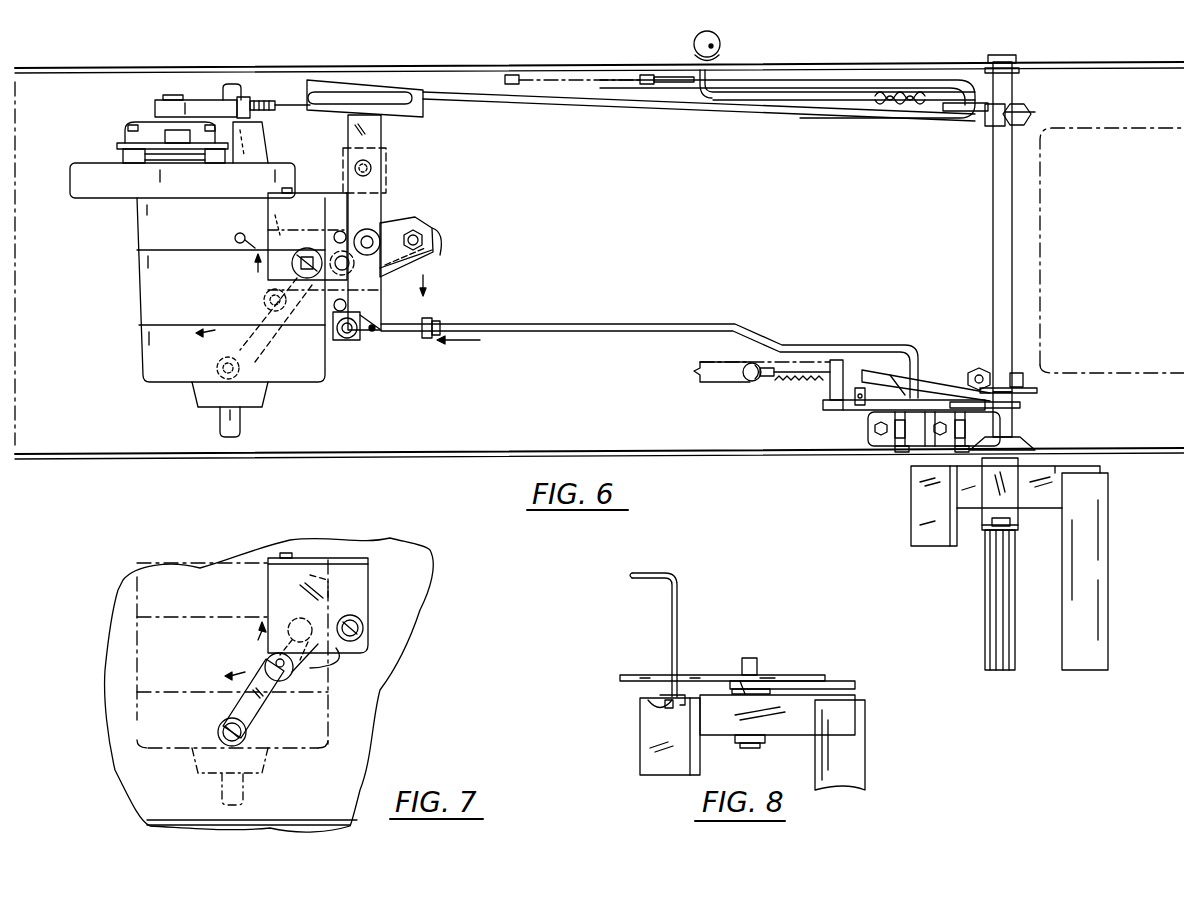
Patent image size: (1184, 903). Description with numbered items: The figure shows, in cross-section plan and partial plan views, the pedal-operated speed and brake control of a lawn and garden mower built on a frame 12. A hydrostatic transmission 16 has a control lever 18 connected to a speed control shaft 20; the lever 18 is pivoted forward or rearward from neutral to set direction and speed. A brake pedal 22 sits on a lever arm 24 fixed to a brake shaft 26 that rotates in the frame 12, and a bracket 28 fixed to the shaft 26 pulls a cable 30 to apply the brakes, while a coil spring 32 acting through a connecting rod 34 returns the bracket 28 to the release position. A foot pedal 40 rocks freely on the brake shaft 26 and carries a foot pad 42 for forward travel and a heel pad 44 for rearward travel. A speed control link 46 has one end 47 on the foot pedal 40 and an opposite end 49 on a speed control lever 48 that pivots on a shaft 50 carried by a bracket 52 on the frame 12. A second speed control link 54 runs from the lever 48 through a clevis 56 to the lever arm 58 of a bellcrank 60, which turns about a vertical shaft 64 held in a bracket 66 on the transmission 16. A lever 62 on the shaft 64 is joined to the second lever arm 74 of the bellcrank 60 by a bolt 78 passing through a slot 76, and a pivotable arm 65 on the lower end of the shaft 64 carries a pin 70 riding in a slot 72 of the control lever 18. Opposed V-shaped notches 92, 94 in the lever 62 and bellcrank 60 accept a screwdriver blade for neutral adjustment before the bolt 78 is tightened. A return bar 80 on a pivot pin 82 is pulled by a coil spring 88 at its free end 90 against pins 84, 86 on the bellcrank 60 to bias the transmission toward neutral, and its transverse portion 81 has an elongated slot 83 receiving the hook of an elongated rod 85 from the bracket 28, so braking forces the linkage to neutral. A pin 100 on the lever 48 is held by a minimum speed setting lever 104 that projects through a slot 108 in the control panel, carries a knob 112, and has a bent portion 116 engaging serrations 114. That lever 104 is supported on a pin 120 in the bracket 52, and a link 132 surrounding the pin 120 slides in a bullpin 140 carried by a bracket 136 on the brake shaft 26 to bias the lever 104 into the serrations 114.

In FIG. 6, the frame 12 is at (175, 65).
In FIG. 7, the frame 12 is at (348, 790).
In FIG. 8, the frame 12 is at (635, 675).
In FIG. 6, the transmission 16 is at (137, 300).
In FIG. 7, the transmission 16 is at (137, 660).
In FIG. 6, the control lever 18 is at (240, 318).
In FIG. 7, the control lever 18 is at (250, 690).
In FIG. 6, the speed control shaft 20 is at (215, 378).
In FIG. 7, the speed control shaft 20 is at (218, 730).
In FIG. 6, the brake pedal 22 is at (985, 628).
In FIG. 6, the lever arm 24 is at (1018, 520).
In FIG. 8, the lever arm 24 is at (840, 687).
In FIG. 6, the brake shaft 26 is at (993, 165).
In FIG. 8, the brake shaft 26 is at (757, 665).
In FIG. 6, the bracket 28 is at (985, 128).
In FIG. 6, the cable 30 is at (855, 92).
In FIG. 6, the coil spring 32 is at (650, 82).
In FIG. 6, the connecting rod 34 is at (800, 80).
In FIG. 6, the foot pedal 40 is at (968, 510).
In FIG. 8, the foot pedal 40 is at (720, 735).
In FIG. 6, the foot pad 42 is at (1108, 608).
In FIG. 8, the foot pad 42 is at (865, 734).
In FIG. 6, the heel pad 44 is at (911, 504).
In FIG. 8, the heel pad 44 is at (640, 758).
In FIG. 6, the speed control link 46 is at (880, 375).
In FIG. 8, the speed control link 46 is at (680, 610).
In FIG. 8, the one end 47 is at (660, 703).
In FIG. 6, the speed control lever 48 is at (828, 408).
In FIG. 6, the opposite end 49 is at (860, 410).
In FIG. 6, the shaft 50 is at (905, 452).
In FIG. 6, the bracket 52 is at (890, 447).
In FIG. 6, the second speed control link 54 is at (712, 324).
In FIG. 6, the clevis 56 is at (430, 340).
In FIG. 6, the lever arm 58 is at (360, 343).
In FIG. 6, the bellcrank 60 is at (300, 225).
In FIG. 6, the lever 62 is at (420, 218).
In FIG. 6, the shaft 64 is at (338, 250).
In FIG. 7, the shaft 64 is at (362, 622).
In FIG. 6, the pivotable arm 65 is at (262, 295).
In FIG. 7, the pivotable arm 65 is at (320, 664).
In FIG. 6, the bracket 66 is at (270, 193).
In FIG. 7, the bracket 66 is at (355, 558).
In FIG. 7, the pin 70 is at (283, 682).
In FIG. 7, the slot 72 is at (298, 628).
In FIG. 6, the second lever arm 74 is at (433, 228).
In FIG. 6, the slot 76 is at (435, 252).
In FIG. 6, the bolt 78 is at (425, 236).
In FIG. 6, the return bar 80 is at (385, 122).
In FIG. 6, the transverse portion 81 is at (322, 113).
In FIG. 6, the pivot pin 82 is at (372, 165).
In FIG. 6, the elongated slot 83 is at (393, 82).
In FIG. 6, the pin 84 is at (370, 228).
In FIG. 6, the elongated rod 85 is at (652, 108).
In FIG. 6, the pin 86 is at (338, 312).
In FIG. 6, the coil spring 88 is at (240, 243).
In FIG. 6, the free end 90 is at (385, 338).
In FIG. 6, the V-shaped notch 92 is at (298, 258).
In FIG. 6, the V-shaped notch 94 is at (335, 232).
In FIG. 6, the pin 100 is at (838, 360).
In FIG. 6, the minimum speed setting lever 104 is at (770, 362).
In FIG. 6, the slot 108 is at (690, 370).
In FIG. 6, the knob 112 is at (742, 376).
In FIG. 6, the serrations 114 is at (785, 385).
In FIG. 6, the portion 116 is at (823, 390).
In FIG. 6, the pin 120 is at (960, 372).
In FIG. 6, the link 132 is at (1013, 420).
In FIG. 6, the bracket 136 is at (1022, 372).
In FIG. 6, the bullpin 140 is at (1037, 392).